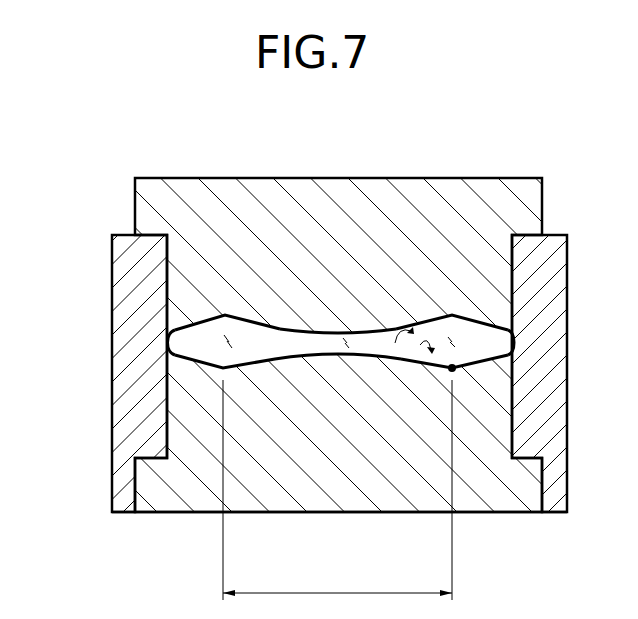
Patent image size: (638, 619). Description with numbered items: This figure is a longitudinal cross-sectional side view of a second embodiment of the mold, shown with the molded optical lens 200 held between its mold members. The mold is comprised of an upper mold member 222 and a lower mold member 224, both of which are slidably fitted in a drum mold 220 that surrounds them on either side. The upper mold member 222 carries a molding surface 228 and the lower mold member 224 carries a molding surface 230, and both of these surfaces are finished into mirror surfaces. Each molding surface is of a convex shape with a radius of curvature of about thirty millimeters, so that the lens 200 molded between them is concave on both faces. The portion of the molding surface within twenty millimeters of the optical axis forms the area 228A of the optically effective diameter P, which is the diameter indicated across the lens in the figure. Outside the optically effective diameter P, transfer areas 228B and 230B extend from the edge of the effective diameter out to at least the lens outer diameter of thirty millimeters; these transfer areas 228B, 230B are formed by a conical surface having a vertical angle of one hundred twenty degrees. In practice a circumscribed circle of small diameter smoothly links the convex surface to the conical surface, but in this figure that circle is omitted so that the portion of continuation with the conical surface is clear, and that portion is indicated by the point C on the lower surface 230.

The optical lens 200 is at (277, 340).
The drum mold 220 is at (118, 320).
The upper mold member 222 is at (343, 190).
The lower mold member 224 is at (357, 503).
The molding surface 228 is at (341, 322).
The area of the optically effective diameter 228A is at (308, 340).
The transfer area 228B is at (252, 360).
The molding surface 230 is at (341, 340).
The transfer area 230B is at (468, 355).
The portion of continuation with the conical surface C is at (462, 381).
The optically effective diameter P is at (337, 499).